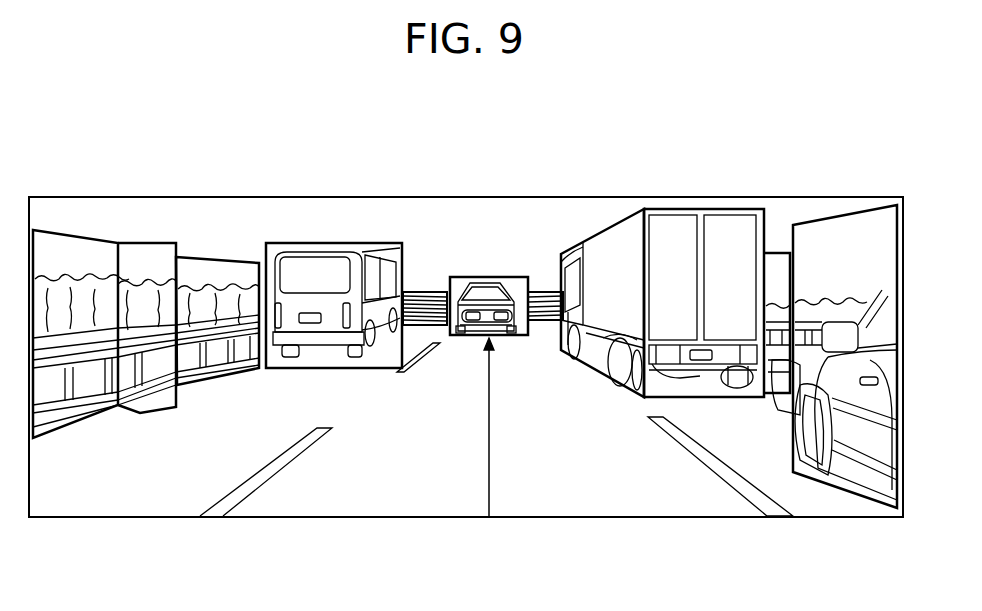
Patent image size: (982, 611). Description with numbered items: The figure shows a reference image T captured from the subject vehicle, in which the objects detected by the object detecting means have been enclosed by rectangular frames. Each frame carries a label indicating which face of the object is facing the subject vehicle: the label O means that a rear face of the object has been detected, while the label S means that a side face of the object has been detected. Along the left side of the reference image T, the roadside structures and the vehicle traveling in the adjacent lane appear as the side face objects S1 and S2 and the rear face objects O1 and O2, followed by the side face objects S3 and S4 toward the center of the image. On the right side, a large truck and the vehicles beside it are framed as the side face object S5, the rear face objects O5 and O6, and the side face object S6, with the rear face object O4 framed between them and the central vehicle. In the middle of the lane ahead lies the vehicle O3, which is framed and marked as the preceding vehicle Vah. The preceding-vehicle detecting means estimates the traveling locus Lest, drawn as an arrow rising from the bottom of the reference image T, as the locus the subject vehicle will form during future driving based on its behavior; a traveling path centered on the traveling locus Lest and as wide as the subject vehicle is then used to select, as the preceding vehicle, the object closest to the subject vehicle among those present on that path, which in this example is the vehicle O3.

The side face object S1 is at (63, 253).
The rear face object O1 is at (153, 252).
The side face object S2 is at (212, 268).
The rear face object O2 is at (273, 248).
The side face object S3 is at (383, 243).
The side face object S4 is at (424, 290).
The vehicle O3 is at (459, 283).
The rear face object O4 is at (543, 291).
The side face object S5 is at (630, 258).
The rear face object O5 is at (725, 240).
The rear face object O6 is at (775, 257).
The side face object S6 is at (848, 257).
The traveling locus Lest is at (490, 455).
The reference image T is at (464, 543).